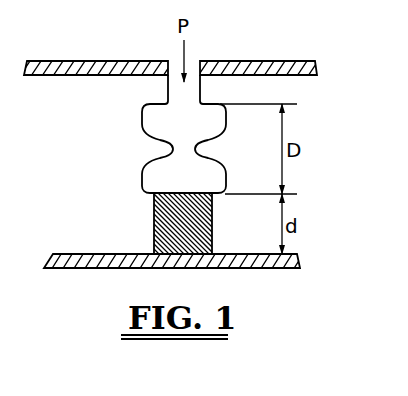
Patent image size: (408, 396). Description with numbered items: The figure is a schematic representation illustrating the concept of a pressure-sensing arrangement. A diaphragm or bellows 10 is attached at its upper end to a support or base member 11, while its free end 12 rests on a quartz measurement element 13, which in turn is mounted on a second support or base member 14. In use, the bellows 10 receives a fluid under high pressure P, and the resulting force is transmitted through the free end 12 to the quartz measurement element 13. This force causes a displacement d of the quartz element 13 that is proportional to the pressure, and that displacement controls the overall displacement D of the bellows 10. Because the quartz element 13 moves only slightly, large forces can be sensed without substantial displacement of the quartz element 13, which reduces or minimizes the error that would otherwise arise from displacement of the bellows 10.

The bellows 10 is at (196, 150).
The support or base member 11 is at (257, 61).
The free end 12 is at (172, 194).
The quartz measurement element 13 is at (155, 232).
The support or base member 14 is at (220, 254).